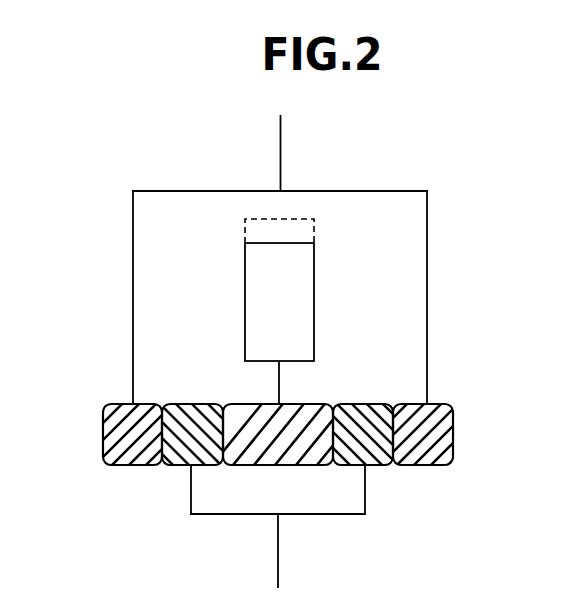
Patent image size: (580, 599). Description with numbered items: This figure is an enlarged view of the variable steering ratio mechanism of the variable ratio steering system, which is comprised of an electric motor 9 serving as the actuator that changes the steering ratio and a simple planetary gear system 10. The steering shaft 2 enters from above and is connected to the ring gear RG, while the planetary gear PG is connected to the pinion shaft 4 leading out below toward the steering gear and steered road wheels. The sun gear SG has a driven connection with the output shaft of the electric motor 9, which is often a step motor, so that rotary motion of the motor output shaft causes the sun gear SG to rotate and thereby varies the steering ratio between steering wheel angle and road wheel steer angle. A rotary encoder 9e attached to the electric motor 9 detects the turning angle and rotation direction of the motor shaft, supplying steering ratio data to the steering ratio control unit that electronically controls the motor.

The steering input shaft 2 is at (281, 154).
The pinion shaft 4 is at (278, 565).
The electric motor 9 is at (245, 295).
The rotary encoder 9e is at (245, 233).
The simple planetary gear system 10 is at (472, 250).
The sun gear SG is at (305, 404).
The planetary gear PG is at (180, 466).
The ring gear RG is at (113, 466).